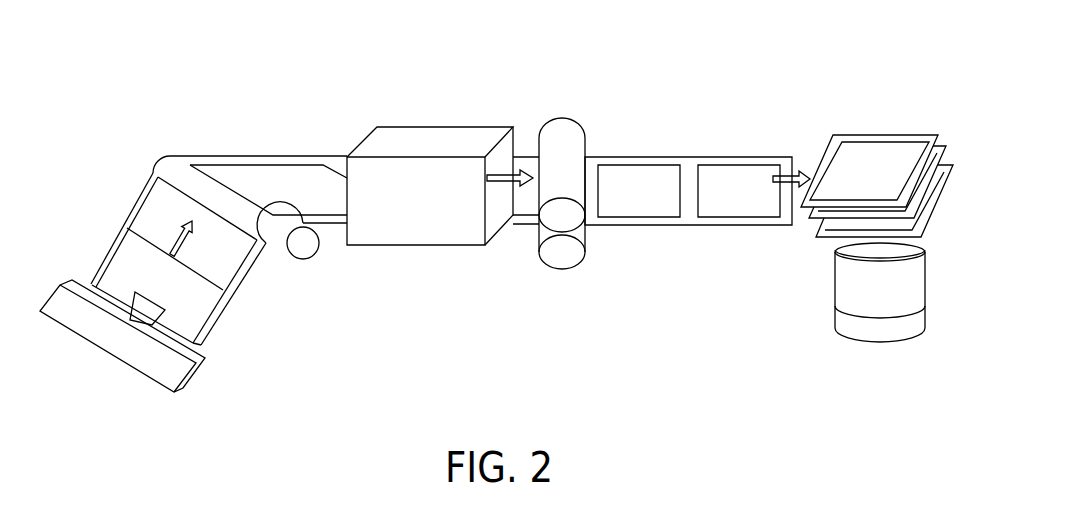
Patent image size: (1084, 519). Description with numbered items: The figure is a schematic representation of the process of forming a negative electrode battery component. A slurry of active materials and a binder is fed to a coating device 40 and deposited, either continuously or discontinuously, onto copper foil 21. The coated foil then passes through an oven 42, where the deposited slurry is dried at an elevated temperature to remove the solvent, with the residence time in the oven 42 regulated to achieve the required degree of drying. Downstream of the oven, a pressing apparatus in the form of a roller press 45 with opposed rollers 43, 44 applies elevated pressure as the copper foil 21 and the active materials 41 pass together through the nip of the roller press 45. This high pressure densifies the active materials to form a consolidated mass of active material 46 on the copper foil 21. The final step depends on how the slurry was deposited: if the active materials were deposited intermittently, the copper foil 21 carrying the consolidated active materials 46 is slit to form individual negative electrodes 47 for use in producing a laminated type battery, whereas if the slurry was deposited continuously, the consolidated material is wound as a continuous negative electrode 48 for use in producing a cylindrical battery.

The copper foil 21 is at (123, 227).
The coating device 40 is at (192, 373).
The active materials 41 is at (272, 167).
The oven 42 is at (430, 137).
The opposed roller 43 is at (567, 253).
The opposed roller 44 is at (562, 133).
The roller press 45 is at (653, 60).
The consolidated mass of active material 46 is at (637, 170).
The individual negative electrode 47 is at (868, 133).
The continuous negative electrode 48 is at (835, 285).